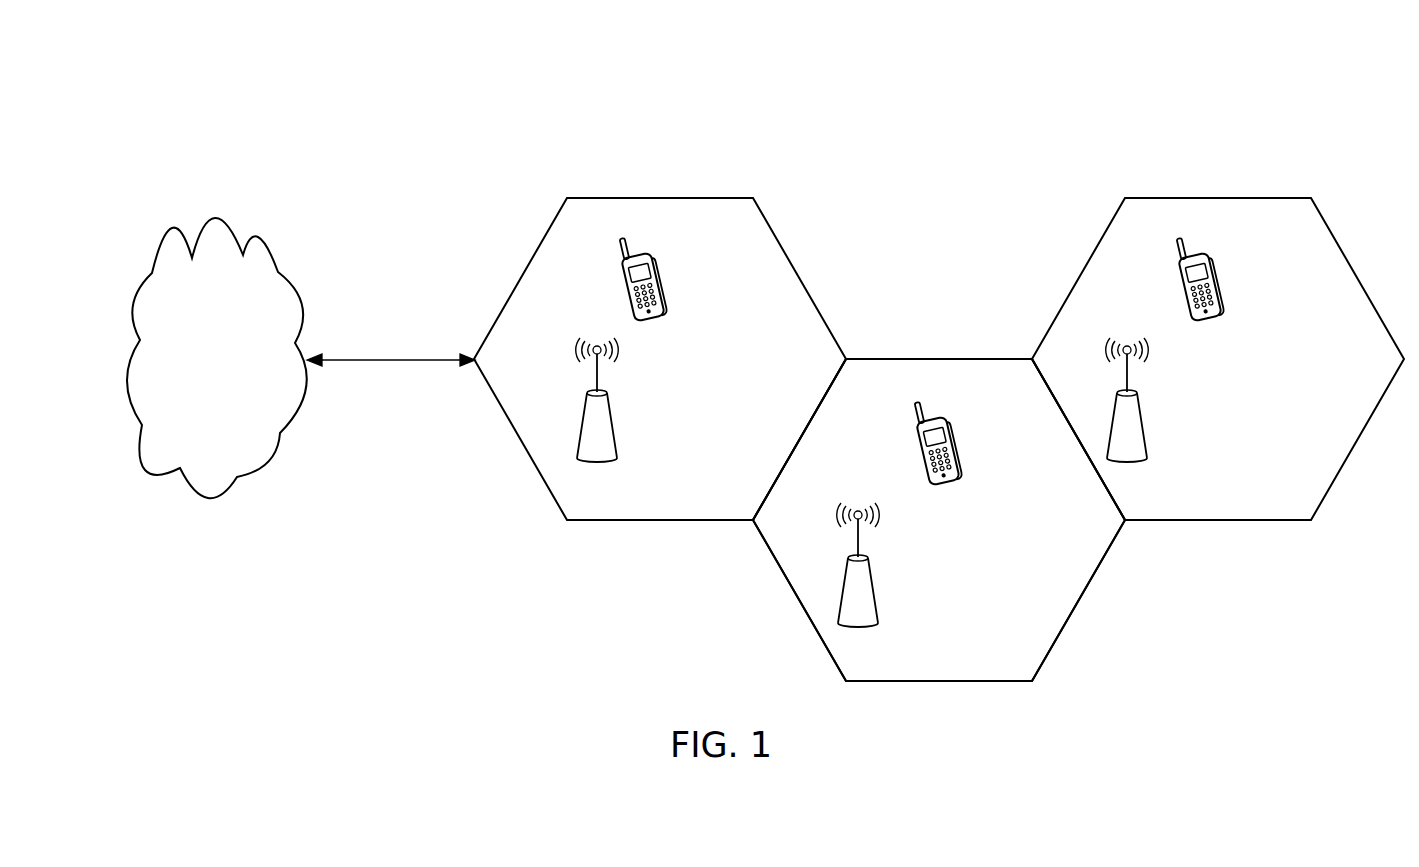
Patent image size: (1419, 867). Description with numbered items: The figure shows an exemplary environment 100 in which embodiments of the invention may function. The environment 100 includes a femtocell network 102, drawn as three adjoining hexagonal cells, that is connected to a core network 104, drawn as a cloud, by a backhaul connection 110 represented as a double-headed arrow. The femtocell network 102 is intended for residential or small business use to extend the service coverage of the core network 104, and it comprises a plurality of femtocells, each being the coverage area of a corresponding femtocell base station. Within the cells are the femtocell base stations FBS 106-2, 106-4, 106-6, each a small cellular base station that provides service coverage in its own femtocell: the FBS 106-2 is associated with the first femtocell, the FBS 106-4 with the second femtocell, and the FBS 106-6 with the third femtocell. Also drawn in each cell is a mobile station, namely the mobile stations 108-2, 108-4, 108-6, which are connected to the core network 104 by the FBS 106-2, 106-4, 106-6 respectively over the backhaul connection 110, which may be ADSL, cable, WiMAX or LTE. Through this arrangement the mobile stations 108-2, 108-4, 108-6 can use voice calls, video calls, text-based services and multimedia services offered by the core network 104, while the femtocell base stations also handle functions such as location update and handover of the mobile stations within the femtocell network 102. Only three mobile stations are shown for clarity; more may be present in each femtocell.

The environment 100 is at (640, 132).
The femtocell network 102 is at (964, 303).
The core network 104 is at (217, 334).
The femtocell base station FBS 106-2 is at (913, 581).
The femtocell base station FBS 106-4 is at (649, 417).
The femtocell base station FBS 106-6 is at (1181, 417).
The mobile station 108-2 is at (978, 463).
The mobile station 108-4 is at (686, 295).
The mobile station 108-6 is at (1242, 295).
The backhaul connection 110 is at (391, 331).